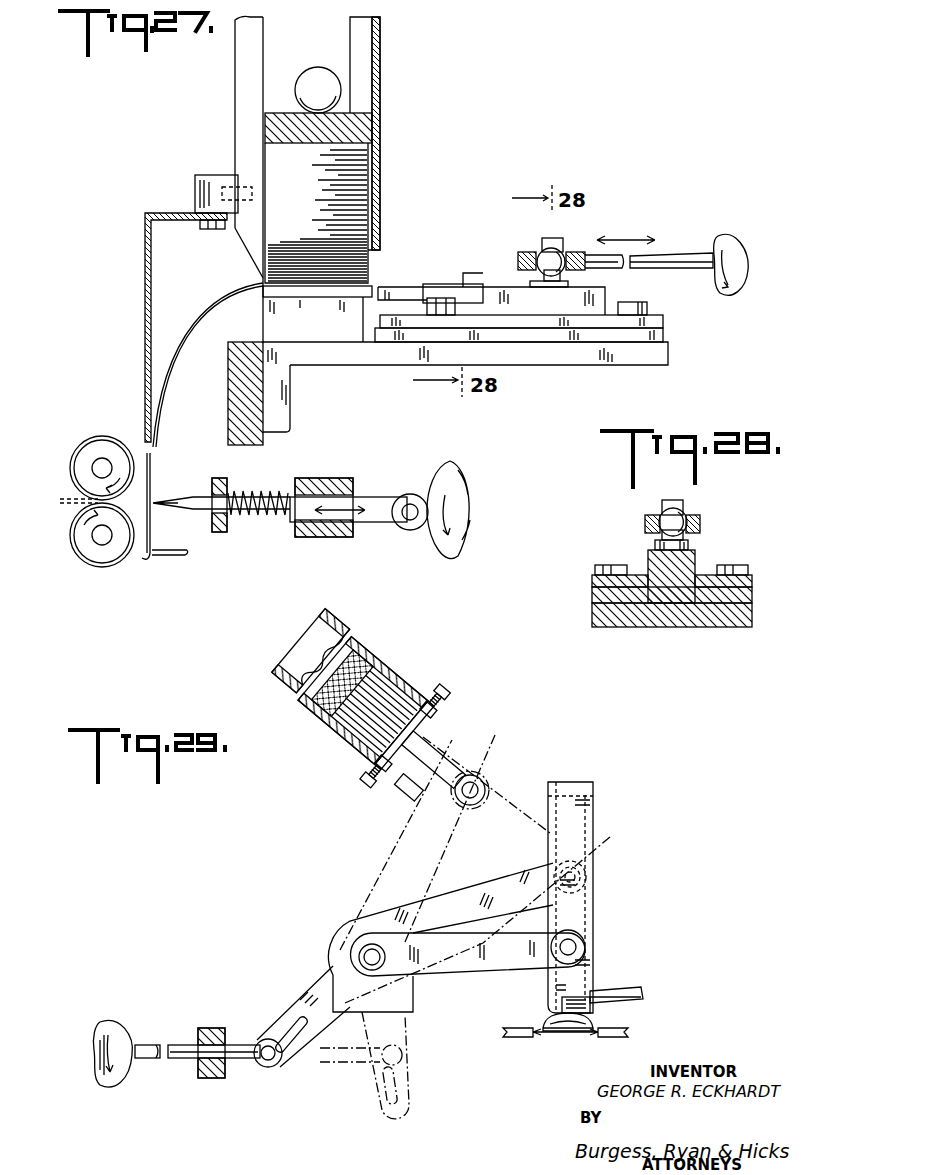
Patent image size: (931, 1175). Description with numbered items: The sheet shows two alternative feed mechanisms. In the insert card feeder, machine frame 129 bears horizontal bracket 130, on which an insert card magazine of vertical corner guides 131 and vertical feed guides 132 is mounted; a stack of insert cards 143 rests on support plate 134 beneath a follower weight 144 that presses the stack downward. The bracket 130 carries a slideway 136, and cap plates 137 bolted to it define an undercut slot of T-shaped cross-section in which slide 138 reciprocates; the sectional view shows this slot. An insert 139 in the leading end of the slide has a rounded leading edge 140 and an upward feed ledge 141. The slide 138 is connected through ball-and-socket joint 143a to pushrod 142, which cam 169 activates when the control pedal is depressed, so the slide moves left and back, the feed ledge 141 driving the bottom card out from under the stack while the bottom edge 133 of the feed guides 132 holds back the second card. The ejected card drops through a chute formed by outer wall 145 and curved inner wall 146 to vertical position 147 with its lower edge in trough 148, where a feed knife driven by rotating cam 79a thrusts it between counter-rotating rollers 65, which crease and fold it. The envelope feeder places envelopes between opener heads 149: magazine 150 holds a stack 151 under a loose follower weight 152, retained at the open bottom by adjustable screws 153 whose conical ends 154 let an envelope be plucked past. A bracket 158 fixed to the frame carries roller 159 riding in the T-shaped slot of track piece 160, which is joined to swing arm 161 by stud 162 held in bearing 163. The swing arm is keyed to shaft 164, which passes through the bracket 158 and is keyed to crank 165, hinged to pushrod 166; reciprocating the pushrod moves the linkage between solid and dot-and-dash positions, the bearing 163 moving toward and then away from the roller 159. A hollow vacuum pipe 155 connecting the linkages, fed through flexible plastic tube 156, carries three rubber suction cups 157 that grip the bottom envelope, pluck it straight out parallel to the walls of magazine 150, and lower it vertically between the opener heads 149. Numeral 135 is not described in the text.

In FIG. 27, the counter-rotating rollers 65 is at (104, 444).
In FIG. 27, the rotating cam 79a is at (441, 479).
In FIG. 27, the machine frame 129 is at (264, 440).
In FIG. 27, the horizontal bracket 130 is at (549, 366).
In FIG. 28, the horizontal bracket 130 is at (592, 612).
In FIG. 27, the vertical corner guides 131 is at (381, 72).
In FIG. 27, the vertical feed guides 132 is at (235, 79).
In FIG. 27, the bottom edge 133 is at (262, 279).
In FIG. 27, the support plate 134 is at (370, 289).
In FIG. 27, the support arm 135 is at (312, 334).
In FIG. 27, the slideway 136 is at (665, 342).
In FIG. 28, the slideway 136 is at (592, 592).
In FIG. 27, the cap plates 137 is at (659, 319).
In FIG. 28, the cap plates 137 is at (592, 578).
In FIG. 27, the slide 138 is at (563, 309).
In FIG. 28, the slide 138 is at (700, 573).
In FIG. 27, the insert 139 is at (466, 284).
In FIG. 28, the insert 139 is at (696, 559).
In FIG. 27, the rounded leading edge 140 is at (364, 300).
In FIG. 27, the feed ledge 141 is at (424, 286).
In FIG. 27, the pushrod 142 is at (667, 267).
In FIG. 27, the insert cards 143 is at (370, 262).
In FIG. 27, the ball-and-socket joint 143a is at (556, 257).
In FIG. 28, the ball-and-socket joint 143a is at (681, 520).
In FIG. 27, the follower weight 144 is at (374, 114).
In FIG. 27, the outer wall 145 is at (145, 304).
In FIG. 27, the curved inner wall 146 is at (203, 333).
In FIG. 27, the vertical position 147 is at (152, 488).
In FIG. 27, the trough 148 is at (151, 566).
In FIG. 29, the opener heads 149 is at (521, 1028).
In FIG. 29, the magazine 150 is at (341, 631).
In FIG. 29, the stack 151 is at (389, 684).
In FIG. 29, the loose follower weight 152 is at (378, 654).
In FIG. 29, the adjustable screws 153 is at (447, 688).
In FIG. 29, the conical end 154 is at (428, 712).
In FIG. 29, the hollow vacuum pipe 155 is at (593, 990).
In FIG. 29, the flexible plastic tube 156 is at (643, 988).
In FIG. 29, the rubber suction cups 157 is at (561, 1026).
In FIG. 29, the bracket 158 is at (330, 983).
In FIG. 29, the roller 159 is at (566, 862).
In FIG. 29, the track piece 160 is at (569, 782).
In FIG. 29, the swing arm 161 is at (443, 878).
In FIG. 29, the stud 162 is at (480, 777).
In FIG. 29, the bearing 163 is at (503, 784).
In FIG. 29, the shaft 164 is at (347, 946).
In FIG. 29, the crank 165 is at (274, 1074).
In FIG. 29, the pushrod 166 is at (161, 1044).
In FIG. 27, the cam 169 is at (718, 250).